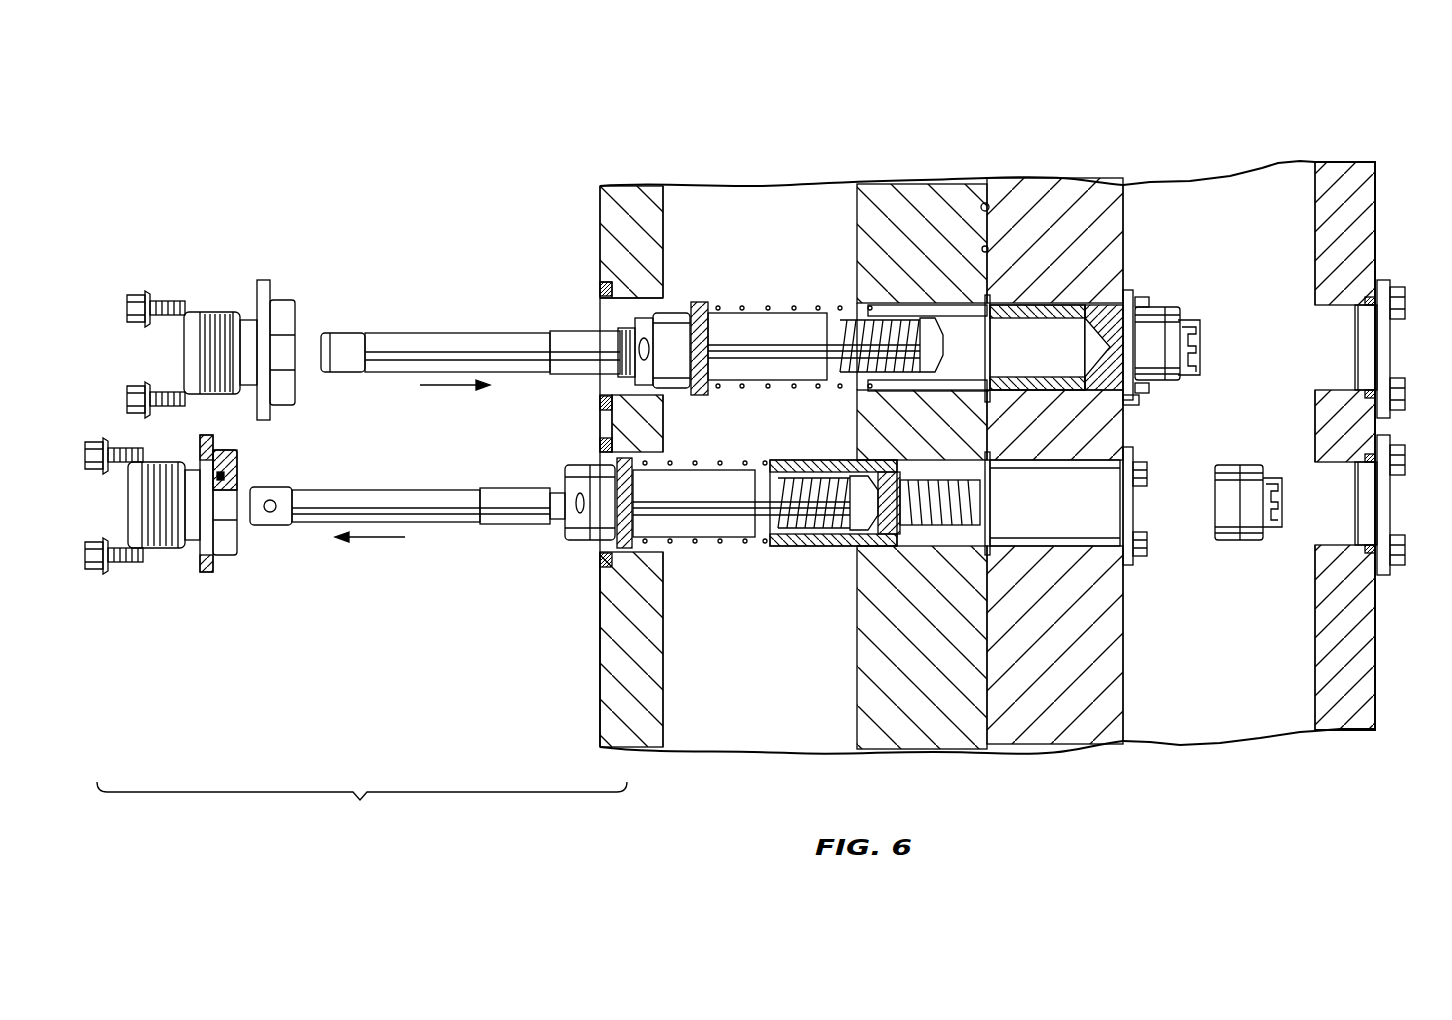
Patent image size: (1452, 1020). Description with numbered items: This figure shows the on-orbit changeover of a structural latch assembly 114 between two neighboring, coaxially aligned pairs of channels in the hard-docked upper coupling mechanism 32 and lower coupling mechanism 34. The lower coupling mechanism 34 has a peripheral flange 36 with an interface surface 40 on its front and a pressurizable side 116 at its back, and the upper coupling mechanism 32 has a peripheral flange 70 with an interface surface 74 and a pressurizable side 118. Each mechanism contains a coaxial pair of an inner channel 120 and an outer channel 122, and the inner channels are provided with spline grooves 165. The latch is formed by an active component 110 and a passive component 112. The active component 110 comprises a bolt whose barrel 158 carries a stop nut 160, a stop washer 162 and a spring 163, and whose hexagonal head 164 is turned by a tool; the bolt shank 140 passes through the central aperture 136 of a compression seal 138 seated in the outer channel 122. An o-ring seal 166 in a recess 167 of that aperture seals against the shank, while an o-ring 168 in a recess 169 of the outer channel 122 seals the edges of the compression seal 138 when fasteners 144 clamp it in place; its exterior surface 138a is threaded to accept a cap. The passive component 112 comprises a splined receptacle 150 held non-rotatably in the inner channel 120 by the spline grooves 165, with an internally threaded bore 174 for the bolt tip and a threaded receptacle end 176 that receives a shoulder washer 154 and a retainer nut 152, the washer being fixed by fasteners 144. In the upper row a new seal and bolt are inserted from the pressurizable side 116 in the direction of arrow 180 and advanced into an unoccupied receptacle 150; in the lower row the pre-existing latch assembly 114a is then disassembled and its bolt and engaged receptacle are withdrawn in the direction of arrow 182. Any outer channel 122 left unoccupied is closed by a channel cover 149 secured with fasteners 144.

The upper coupling mechanism 32 is at (1223, 762).
The lower coupling mechanism 34 is at (741, 762).
The peripheral flange 36 is at (636, 186).
The interface surface 40 is at (983, 249).
The peripheral flange 70 is at (1075, 190).
The interface surface 74 is at (990, 208).
The active component 110 is at (714, 298).
The passive component 112 is at (1175, 285).
The structural latch assembly 114 is at (145, 351).
The pre-existing latch assembly 114a is at (193, 605).
The pressurizable side 116 is at (600, 660).
The pressurizable side 118 is at (1377, 660).
The inner channel 120 is at (963, 365).
The outer channel 122 is at (603, 310).
The central aperture 136 is at (286, 302).
The compression seal 138 is at (264, 282).
The exterior surface 138a is at (207, 312).
The bolt shank 140 is at (448, 335).
The fasteners 144 is at (149, 290).
The channel cover 149 is at (1385, 346).
The receptacle 150 is at (1134, 396).
The retainer nut 152 is at (1165, 313).
The shoulder washer 154 is at (1128, 292).
The barrel 158 is at (774, 345).
The stop nut 160 is at (680, 386).
The stop washer 162 is at (706, 396).
The spring 163 is at (781, 392).
The hexagonal head 164 is at (351, 332).
The spline grooves 165 is at (924, 305).
The o-ring seal 166 is at (221, 463).
The recess 167 is at (237, 471).
The o-ring 168 is at (600, 401).
The recess 169 is at (603, 422).
The internally threaded bore 174 is at (1042, 355).
The threaded receptacle end 176 is at (1202, 344).
The arrow 180 is at (445, 390).
The arrow 182 is at (370, 545).